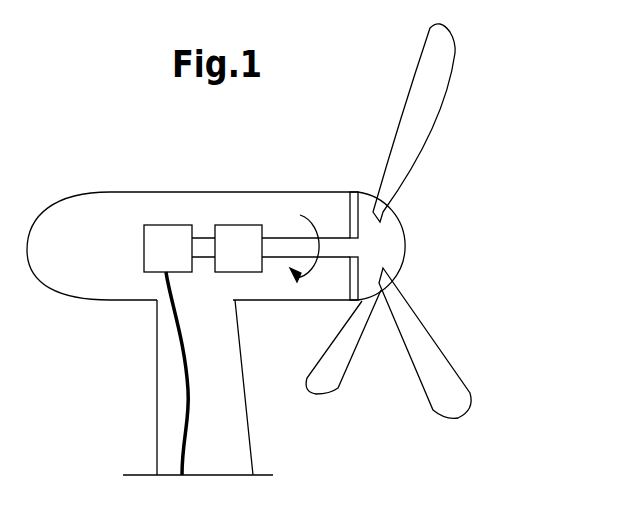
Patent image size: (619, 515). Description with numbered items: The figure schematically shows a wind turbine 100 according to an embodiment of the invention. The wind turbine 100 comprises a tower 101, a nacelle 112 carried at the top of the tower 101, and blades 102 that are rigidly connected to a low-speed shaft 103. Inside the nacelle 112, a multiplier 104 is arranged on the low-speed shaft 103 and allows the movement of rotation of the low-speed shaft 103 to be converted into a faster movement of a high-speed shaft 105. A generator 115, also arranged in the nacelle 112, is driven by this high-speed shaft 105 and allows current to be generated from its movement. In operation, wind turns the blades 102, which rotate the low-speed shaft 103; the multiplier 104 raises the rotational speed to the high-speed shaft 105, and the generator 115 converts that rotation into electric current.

The wind turbine 100 is at (442, 221).
The tower 101 is at (157, 410).
The blades 102 is at (427, 345).
The low-speed shaft 103 is at (282, 248).
The multiplier 104 is at (232, 235).
The high-speed shaft 105 is at (202, 247).
The nacelle 112 is at (40, 218).
The generator 115 is at (143, 255).